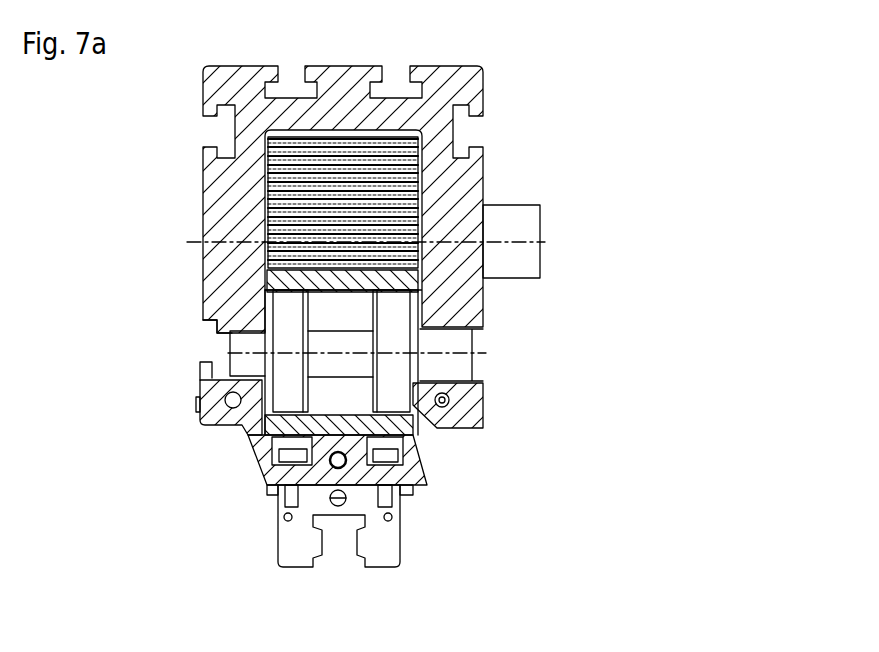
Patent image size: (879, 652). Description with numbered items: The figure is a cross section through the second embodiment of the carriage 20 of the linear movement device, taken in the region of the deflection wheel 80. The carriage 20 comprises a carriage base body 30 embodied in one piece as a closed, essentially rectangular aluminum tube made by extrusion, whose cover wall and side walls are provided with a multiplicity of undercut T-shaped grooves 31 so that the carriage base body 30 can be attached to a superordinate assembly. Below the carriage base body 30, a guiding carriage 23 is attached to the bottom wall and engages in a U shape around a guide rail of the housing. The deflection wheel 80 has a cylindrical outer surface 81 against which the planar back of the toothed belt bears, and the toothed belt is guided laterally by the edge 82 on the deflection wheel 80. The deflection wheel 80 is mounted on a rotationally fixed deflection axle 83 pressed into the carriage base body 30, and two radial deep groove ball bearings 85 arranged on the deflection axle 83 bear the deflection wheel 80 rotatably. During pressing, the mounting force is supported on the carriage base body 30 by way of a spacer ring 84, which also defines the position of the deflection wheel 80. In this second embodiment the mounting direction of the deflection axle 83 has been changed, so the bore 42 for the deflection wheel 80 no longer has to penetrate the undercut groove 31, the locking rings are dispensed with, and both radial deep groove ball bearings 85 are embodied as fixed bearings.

The carriage 20 is at (682, 90).
The guiding carriage 23 is at (380, 537).
The carriage base body 30 is at (203, 192).
The undercut T-shaped groove 31 is at (225, 355).
The bore 42 is at (233, 340).
The deflection wheel 80 is at (424, 438).
The cylindrical outer surface 81 is at (353, 272).
The edge 82 is at (247, 436).
The deflection axle 83 is at (455, 368).
The spacer ring 84 is at (262, 305).
The radial deep groove ball bearing 85 is at (205, 388).